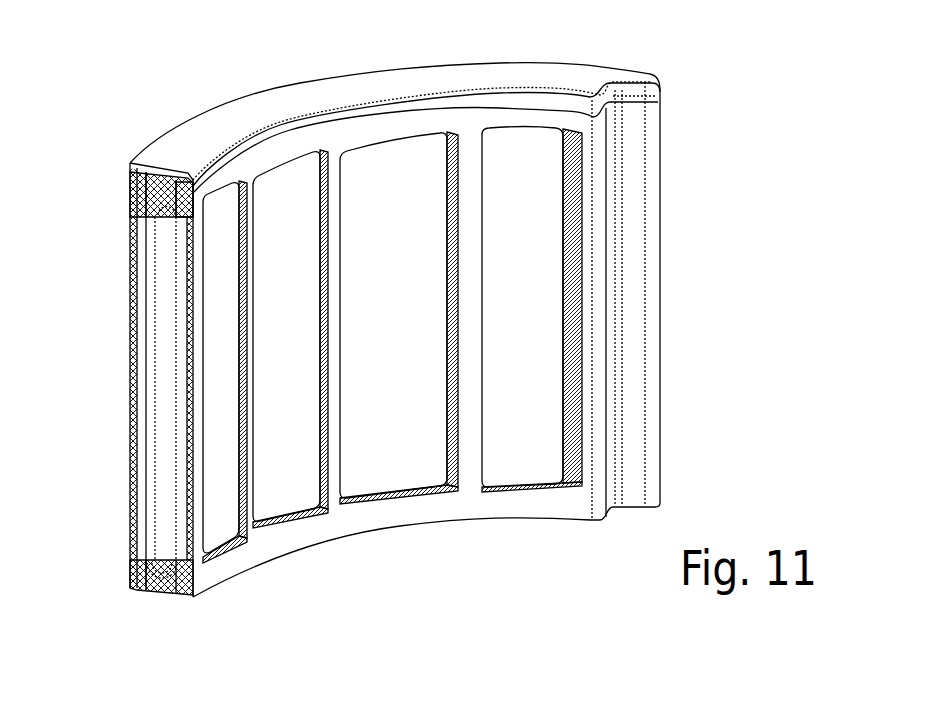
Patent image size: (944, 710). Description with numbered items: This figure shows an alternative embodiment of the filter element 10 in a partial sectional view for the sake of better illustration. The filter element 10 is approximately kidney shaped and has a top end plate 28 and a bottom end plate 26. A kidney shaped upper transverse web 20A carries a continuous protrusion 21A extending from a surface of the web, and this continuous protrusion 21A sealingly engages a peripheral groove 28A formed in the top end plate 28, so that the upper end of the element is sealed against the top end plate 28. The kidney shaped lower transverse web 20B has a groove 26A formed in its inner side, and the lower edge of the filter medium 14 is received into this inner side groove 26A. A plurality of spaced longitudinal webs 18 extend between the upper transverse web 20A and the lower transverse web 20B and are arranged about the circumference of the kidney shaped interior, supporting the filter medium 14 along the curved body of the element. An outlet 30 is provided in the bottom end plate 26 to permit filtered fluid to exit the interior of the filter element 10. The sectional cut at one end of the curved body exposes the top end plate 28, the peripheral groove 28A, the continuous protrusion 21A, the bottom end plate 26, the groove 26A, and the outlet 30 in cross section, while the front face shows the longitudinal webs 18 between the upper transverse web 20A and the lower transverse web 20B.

The filter element 10 is at (414, 311).
The filter medium 14 is at (527, 203).
The longitudinal webs 18 is at (466, 262).
The upper transverse web 20A is at (420, 138).
The lower transverse web 20B is at (387, 512).
The continuous protrusion 21A is at (177, 193).
The bottom end plate 26 is at (303, 548).
The groove 26A is at (138, 572).
The top end plate 28 is at (541, 77).
The peripheral groove 28A is at (175, 185).
The outlet 30 is at (163, 592).